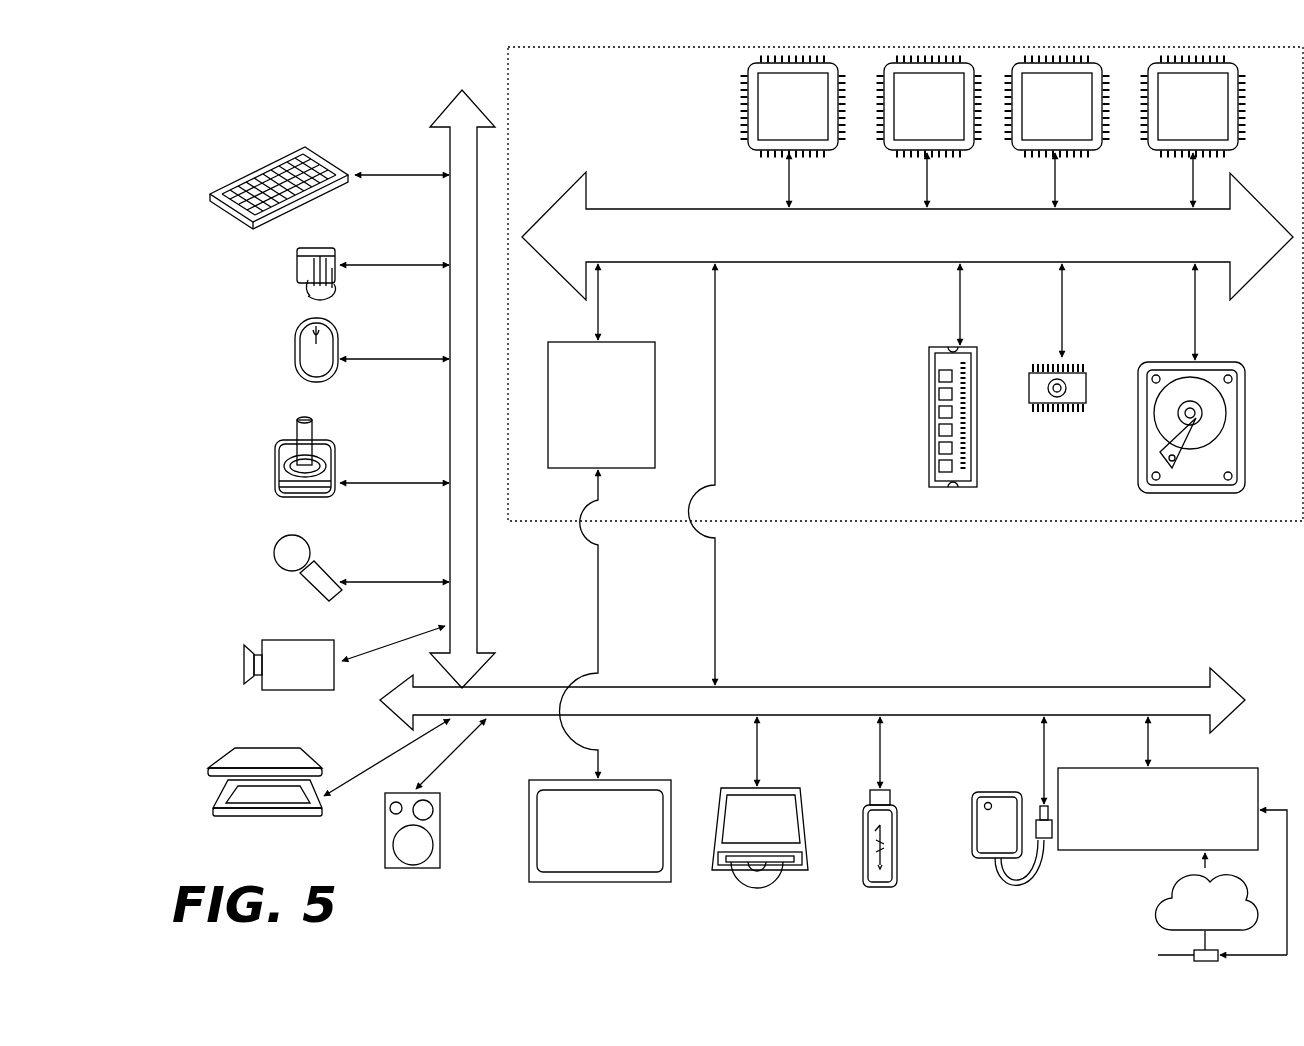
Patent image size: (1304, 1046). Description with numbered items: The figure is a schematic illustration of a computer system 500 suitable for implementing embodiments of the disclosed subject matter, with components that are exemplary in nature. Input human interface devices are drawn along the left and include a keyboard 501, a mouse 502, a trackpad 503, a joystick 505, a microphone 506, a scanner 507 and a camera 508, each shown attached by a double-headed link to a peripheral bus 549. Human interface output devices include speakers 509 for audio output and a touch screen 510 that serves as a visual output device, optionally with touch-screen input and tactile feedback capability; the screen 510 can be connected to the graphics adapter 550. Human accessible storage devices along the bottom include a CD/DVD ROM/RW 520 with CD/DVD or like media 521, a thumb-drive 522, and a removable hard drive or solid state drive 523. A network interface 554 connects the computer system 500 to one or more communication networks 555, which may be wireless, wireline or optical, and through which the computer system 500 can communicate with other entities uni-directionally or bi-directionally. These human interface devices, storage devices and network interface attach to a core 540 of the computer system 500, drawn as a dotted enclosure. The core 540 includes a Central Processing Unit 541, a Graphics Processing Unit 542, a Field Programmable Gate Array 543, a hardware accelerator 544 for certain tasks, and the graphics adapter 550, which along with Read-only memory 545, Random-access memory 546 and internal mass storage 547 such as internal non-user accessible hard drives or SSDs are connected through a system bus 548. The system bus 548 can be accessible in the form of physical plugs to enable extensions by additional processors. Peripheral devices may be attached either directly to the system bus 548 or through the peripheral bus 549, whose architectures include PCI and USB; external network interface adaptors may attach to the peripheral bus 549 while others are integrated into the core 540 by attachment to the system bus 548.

The computer system 500 is at (234, 110).
The keyboard 501 is at (214, 200).
The mouse 502 is at (295, 348).
The trackpad 503 is at (297, 270).
The joystick 505 is at (273, 483).
The microphone 506 is at (276, 553).
The scanner 507 is at (213, 807).
The camera 508 is at (244, 665).
The speakers 509 is at (411, 868).
The touch screen 510 is at (597, 884).
The CD/DVD ROM/RW 520 is at (803, 876).
The CD/DVD media 521 is at (745, 876).
The thumb-drive 522 is at (885, 888).
The removable hard drive or solid state drive 523 is at (982, 862).
The core 540 is at (900, 524).
The Central Processing Unit 541 is at (793, 133).
The Graphics Processing Unit 542 is at (929, 133).
The Field Programmable Gate Array 543 is at (1057, 133).
The hardware accelerator 544 is at (1193, 133).
The Read-only memory 545 is at (1050, 416).
The Random-access memory 546 is at (926, 440).
The internal mass storage 547 is at (1151, 362).
The system bus 548 is at (907, 236).
The peripheral bus 549 is at (450, 137).
The graphics adapter 550 is at (601, 366).
The network interface 554 is at (1172, 836).
The communication network 555 is at (1165, 922).